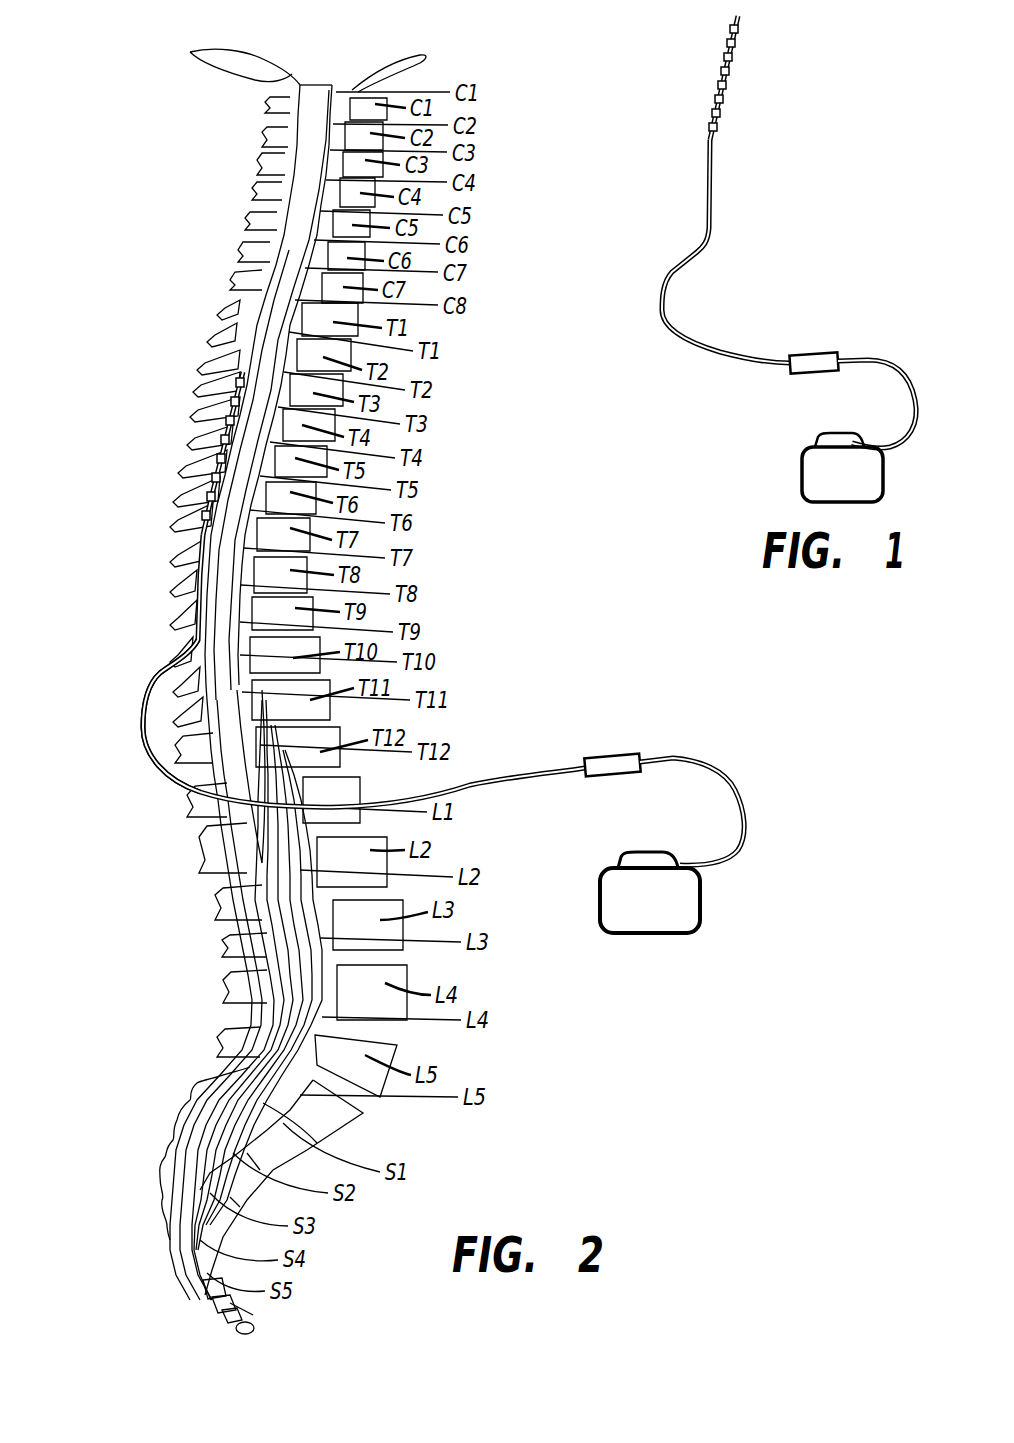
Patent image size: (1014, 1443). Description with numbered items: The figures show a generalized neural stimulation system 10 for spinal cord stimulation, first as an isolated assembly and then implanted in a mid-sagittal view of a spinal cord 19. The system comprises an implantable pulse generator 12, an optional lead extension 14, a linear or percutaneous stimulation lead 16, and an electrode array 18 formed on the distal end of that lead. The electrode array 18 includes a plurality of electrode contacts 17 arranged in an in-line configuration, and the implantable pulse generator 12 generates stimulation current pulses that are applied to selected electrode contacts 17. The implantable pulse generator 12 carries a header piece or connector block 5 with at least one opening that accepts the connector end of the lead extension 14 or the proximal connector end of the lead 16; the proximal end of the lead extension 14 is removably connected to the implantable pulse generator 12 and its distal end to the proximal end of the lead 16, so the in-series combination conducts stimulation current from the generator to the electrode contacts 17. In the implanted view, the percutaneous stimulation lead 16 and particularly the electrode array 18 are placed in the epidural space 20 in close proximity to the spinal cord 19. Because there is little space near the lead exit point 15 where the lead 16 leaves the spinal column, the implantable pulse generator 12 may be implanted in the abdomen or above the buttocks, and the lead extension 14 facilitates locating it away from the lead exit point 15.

In FIG. 1, the connector block 5 is at (838, 435).
In FIG. 2, the connector block 5 is at (645, 852).
In FIG. 1, the neural stimulation system 10 is at (835, 300).
In FIG. 1, the implantable pulse generator 12 is at (810, 473).
In FIG. 2, the implantable pulse generator 12 is at (645, 915).
In FIG. 1, the lead extension 14 is at (880, 360).
In FIG. 2, the lead extension 14 is at (706, 760).
In FIG. 2, the lead exit point 15 is at (143, 738).
In FIG. 1, the percutaneous stimulation lead 16 is at (711, 185).
In FIG. 2, the percutaneous stimulation lead 16 is at (492, 772).
In FIG. 1, the electrode contacts 17 is at (731, 30).
In FIG. 1, the electrode array 18 is at (752, 20).
In FIG. 2, the electrode array 18 is at (210, 365).
In FIG. 2, the spinal cord 19 is at (280, 287).
In FIG. 2, the epidural space 20 is at (253, 338).